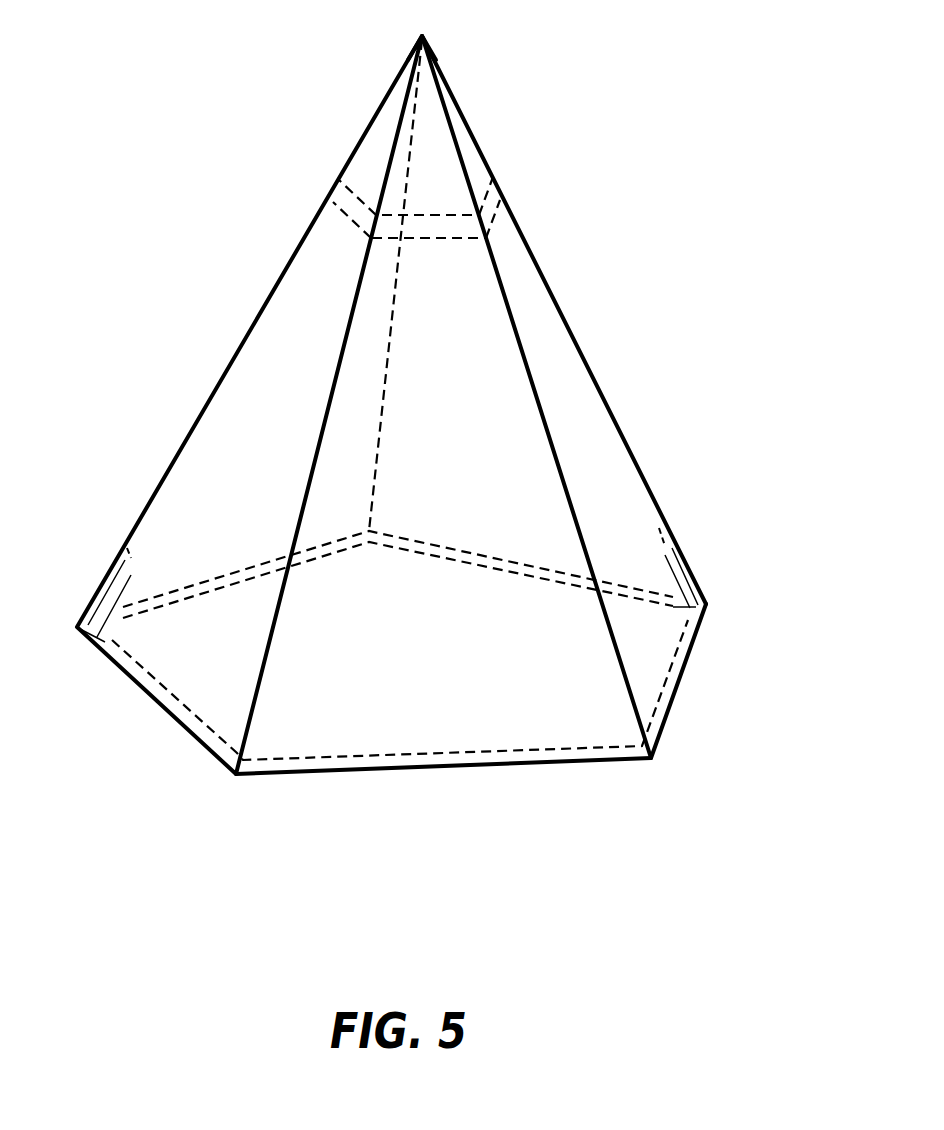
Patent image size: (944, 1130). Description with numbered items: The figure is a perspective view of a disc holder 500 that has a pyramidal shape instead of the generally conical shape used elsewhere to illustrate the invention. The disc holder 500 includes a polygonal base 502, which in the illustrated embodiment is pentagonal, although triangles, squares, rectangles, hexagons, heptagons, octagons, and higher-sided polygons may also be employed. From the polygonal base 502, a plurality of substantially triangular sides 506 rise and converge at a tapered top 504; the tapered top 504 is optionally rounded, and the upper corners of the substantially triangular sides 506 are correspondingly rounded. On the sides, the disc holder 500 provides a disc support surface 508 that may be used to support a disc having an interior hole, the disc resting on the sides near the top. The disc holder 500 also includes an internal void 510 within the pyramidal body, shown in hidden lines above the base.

The disc holder 500 is at (157, 51).
The polygonal base 502 is at (690, 653).
The tapered top 504 is at (433, 50).
The substantially triangular sides 506 is at (583, 393).
The disc support surface 508 is at (500, 201).
The internal void 510 is at (423, 805).